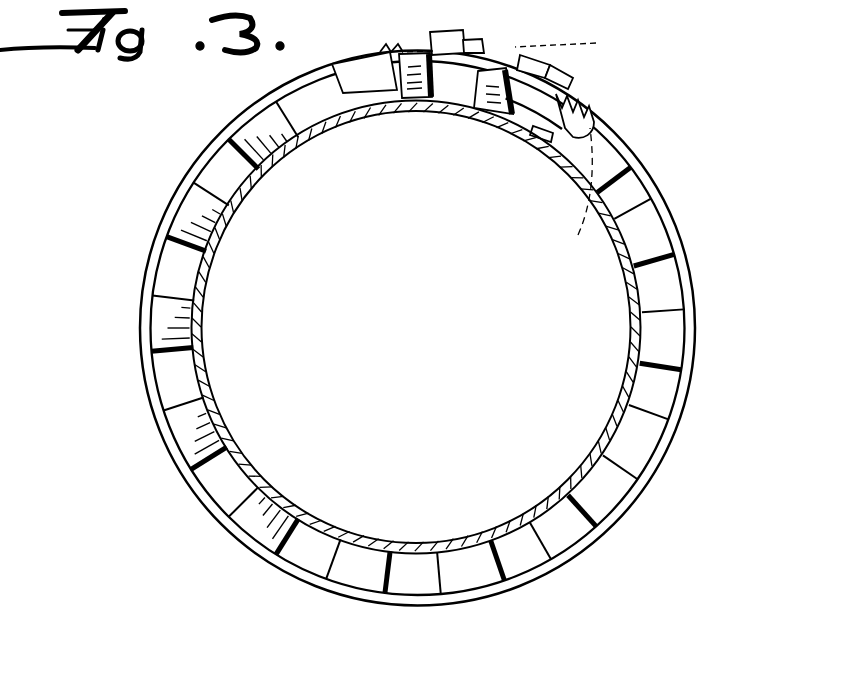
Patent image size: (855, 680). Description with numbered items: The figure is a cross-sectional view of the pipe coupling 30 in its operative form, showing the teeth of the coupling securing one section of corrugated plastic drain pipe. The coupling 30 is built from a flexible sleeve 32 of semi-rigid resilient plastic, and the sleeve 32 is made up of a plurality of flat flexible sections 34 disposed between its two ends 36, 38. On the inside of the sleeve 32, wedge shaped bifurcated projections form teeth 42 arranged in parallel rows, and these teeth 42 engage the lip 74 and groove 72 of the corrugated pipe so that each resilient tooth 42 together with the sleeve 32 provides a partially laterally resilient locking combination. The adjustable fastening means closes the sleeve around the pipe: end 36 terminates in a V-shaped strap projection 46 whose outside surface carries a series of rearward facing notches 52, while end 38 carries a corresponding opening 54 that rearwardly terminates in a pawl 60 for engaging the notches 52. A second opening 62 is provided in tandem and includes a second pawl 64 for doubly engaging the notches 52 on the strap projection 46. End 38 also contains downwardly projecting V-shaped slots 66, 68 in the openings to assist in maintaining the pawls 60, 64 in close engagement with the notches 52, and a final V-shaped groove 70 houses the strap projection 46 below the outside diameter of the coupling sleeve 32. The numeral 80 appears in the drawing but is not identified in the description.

The pipe coupling 30 is at (633, 139).
The flexible sleeve 32 is at (693, 288).
The flat flexible sections 34 is at (655, 186).
The end of sleeve 36 is at (373, 47).
The end of sleeve 38 is at (476, 15).
The teeth 42 is at (653, 238).
The V-shaped strap projection 46 is at (377, 72).
The rearward facing notches 52 is at (558, 138).
The opening 54 is at (496, 26).
The pawl 60 is at (488, 36).
The second opening 62 is at (521, 40).
The second pawl 64 is at (601, 72).
The V-shaped slot 66 is at (412, 100).
The V-shaped slot 68 is at (477, 112).
The final V-shaped groove 70 is at (577, 196).
The groove 72 is at (237, 177).
The lip 74 is at (210, 162).
The strap 80 is at (695, 13).